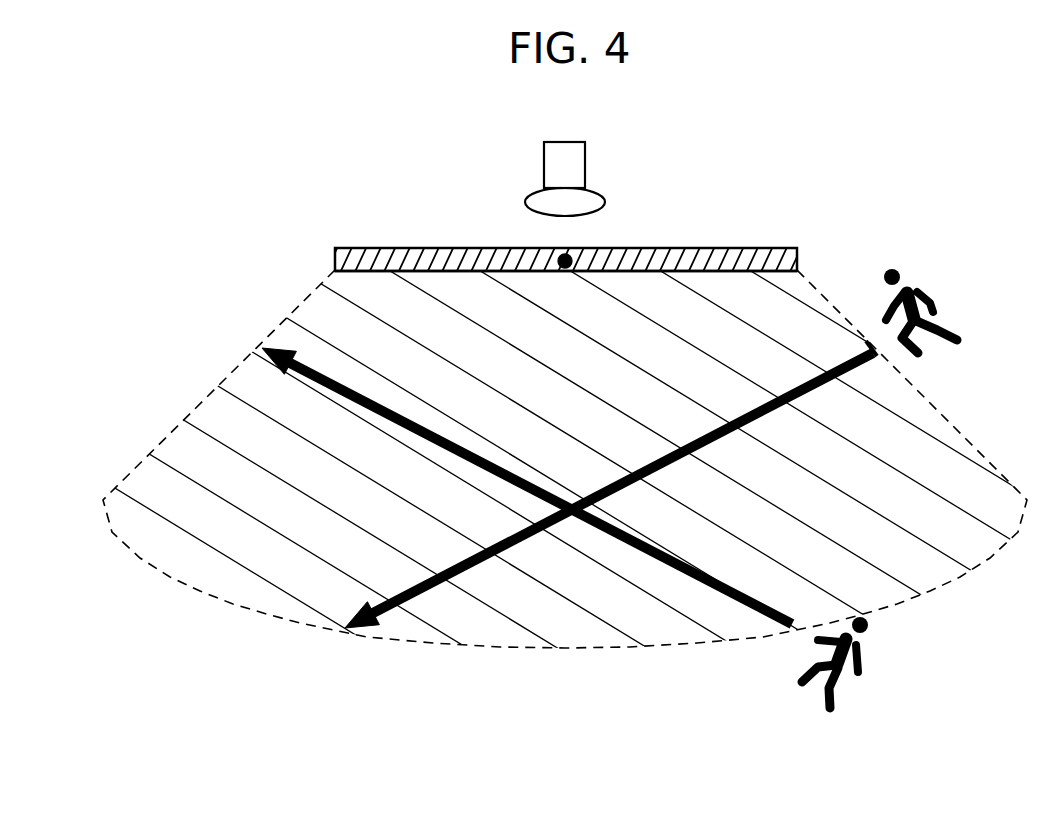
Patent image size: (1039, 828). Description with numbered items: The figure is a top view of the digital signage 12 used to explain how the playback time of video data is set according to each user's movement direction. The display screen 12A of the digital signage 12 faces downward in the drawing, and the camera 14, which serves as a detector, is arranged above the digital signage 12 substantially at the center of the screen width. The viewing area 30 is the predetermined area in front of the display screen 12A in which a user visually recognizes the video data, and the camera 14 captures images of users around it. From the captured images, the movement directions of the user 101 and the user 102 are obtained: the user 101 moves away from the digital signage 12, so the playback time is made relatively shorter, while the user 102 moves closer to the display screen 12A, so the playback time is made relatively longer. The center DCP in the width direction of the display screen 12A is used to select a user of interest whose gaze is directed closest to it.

The digital signage 12 is at (692, 247).
The display screen 12A is at (727, 272).
The camera 14 is at (586, 170).
The viewing area 30 is at (277, 327).
The user 101 is at (928, 318).
The user 102 is at (838, 686).
The center of the display screen DCP is at (564, 255).